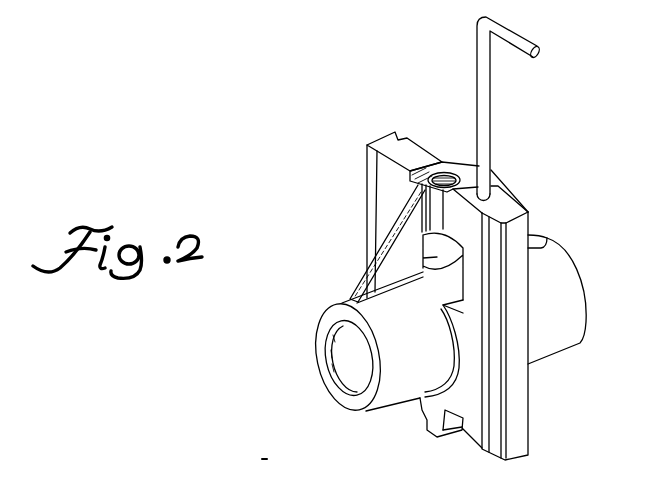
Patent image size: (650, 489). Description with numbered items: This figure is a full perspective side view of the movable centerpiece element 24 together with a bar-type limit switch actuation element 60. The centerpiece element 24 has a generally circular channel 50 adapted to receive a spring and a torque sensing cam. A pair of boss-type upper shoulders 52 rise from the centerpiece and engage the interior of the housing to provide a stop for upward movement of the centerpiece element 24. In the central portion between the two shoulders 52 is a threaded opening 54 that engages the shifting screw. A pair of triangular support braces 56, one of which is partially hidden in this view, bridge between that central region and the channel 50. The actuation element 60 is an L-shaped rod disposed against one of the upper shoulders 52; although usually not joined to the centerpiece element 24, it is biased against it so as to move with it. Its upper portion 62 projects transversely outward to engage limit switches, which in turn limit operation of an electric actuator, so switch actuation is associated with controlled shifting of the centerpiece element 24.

The centerpiece element 24 is at (367, 195).
The generally circular channel 50 is at (365, 351).
The boss-type upper shoulders 52 is at (391, 143).
The threaded opening 54 is at (444, 172).
The triangular support braces 56 is at (372, 273).
The limit switch actuation element 60 is at (491, 93).
The upper portion 62 is at (514, 33).